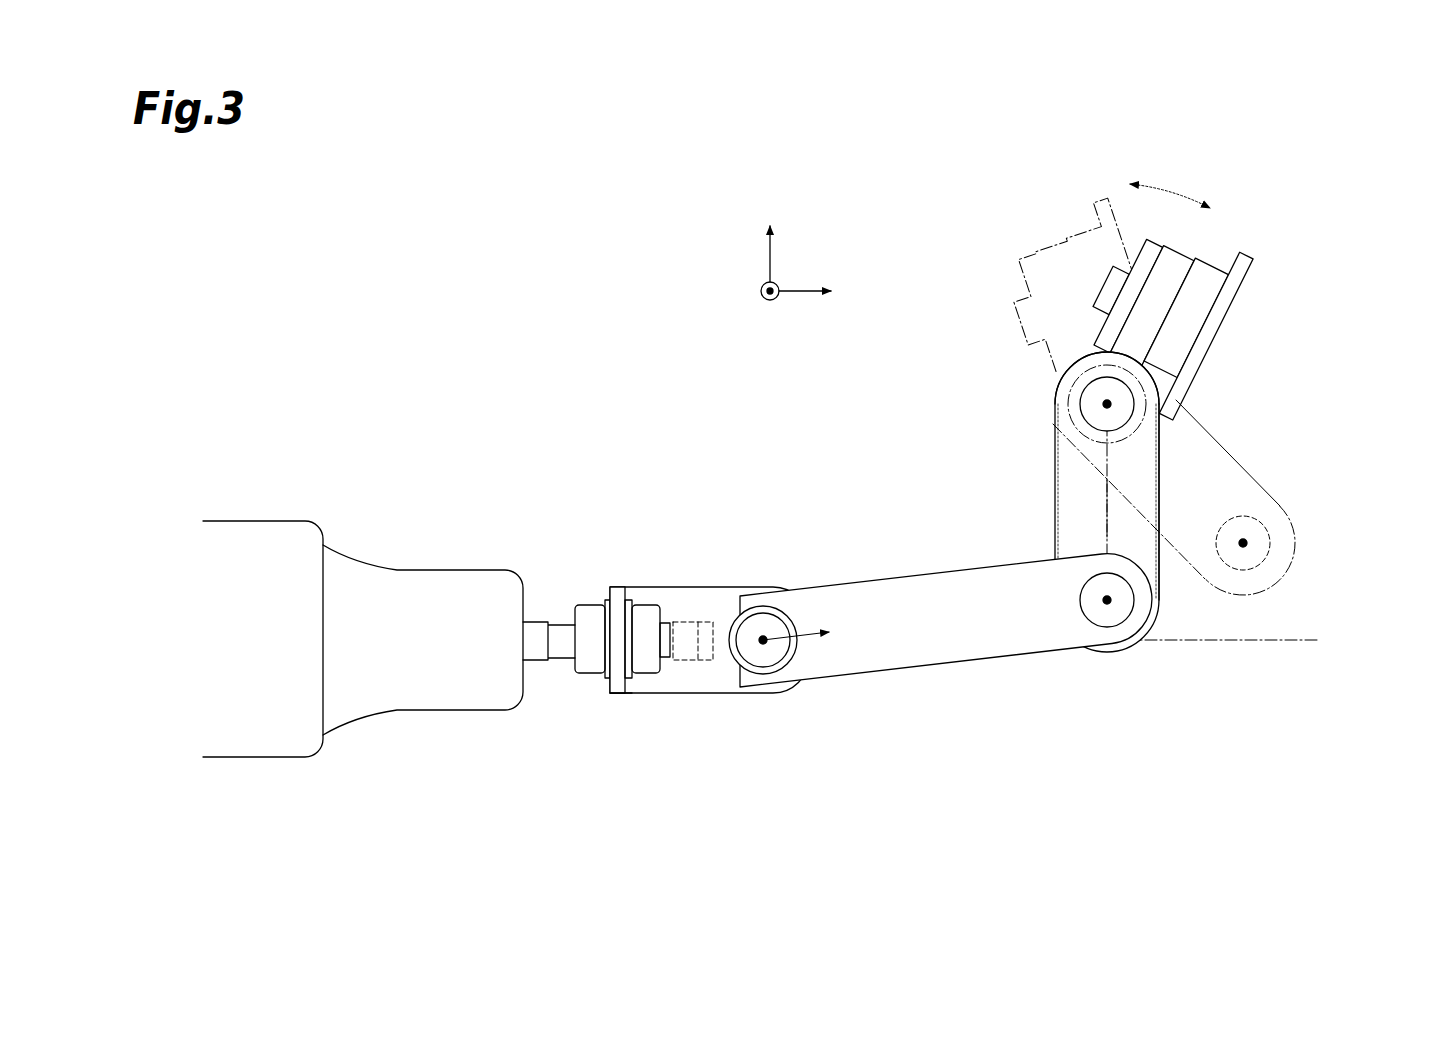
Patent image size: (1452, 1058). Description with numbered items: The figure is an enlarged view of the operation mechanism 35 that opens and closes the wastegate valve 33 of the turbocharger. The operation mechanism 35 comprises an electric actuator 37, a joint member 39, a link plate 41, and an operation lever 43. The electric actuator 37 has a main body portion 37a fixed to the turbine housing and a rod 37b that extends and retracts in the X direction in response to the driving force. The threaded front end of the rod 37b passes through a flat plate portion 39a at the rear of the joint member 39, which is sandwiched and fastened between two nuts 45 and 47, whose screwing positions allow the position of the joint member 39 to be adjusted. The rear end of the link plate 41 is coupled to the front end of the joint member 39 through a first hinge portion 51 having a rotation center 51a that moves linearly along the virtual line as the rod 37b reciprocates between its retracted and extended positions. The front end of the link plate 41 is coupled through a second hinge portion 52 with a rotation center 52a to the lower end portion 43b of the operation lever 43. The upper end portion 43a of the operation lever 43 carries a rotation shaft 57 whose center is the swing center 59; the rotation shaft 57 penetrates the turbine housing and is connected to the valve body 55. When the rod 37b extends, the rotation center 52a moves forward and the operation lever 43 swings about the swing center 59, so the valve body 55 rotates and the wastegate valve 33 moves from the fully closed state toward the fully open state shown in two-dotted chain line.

The wastegate valve 33 is at (1057, 258).
The operation mechanism 35 is at (578, 280).
The electric actuator 37 is at (389, 694).
The main body portion 37a is at (433, 698).
The rod 37b is at (523, 697).
The joint member 39 is at (704, 582).
The flat plate portion 39a is at (615, 696).
The link plate 41 is at (912, 607).
The operation lever 43 is at (1147, 502).
The upper end portion 43a is at (1062, 412).
The lower end portion 43b is at (1283, 543).
The nut 45 is at (588, 606).
The nut 47 is at (618, 588).
The first hinge portion 51 is at (770, 690).
The rotation center 51a is at (765, 606).
The second hinge portion 52 is at (1195, 599).
The rotation center 52a is at (1255, 548).
The valve body 55 is at (1150, 289).
The rotation shaft 57 is at (1095, 390).
The swing center 59 is at (1110, 403).